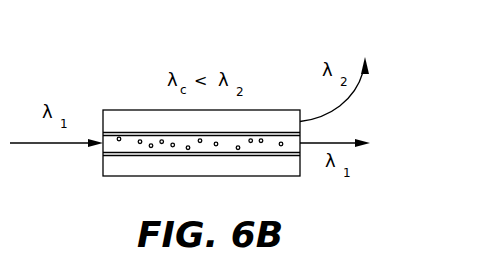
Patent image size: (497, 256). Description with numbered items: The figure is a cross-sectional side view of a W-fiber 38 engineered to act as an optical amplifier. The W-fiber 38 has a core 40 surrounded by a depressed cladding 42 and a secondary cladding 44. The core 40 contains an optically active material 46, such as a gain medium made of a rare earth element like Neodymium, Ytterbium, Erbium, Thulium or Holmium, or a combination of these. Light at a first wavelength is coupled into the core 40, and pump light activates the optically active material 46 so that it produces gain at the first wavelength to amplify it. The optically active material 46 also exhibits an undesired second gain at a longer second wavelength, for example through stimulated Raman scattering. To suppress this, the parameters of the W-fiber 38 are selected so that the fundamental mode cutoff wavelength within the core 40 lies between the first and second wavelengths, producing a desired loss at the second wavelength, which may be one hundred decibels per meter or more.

The W-fiber 38 is at (140, 44).
The core 40 is at (103, 141).
The depressed cladding 42 is at (145, 132).
The secondary cladding 44 is at (252, 119).
The optically active material 46 is at (148, 145).